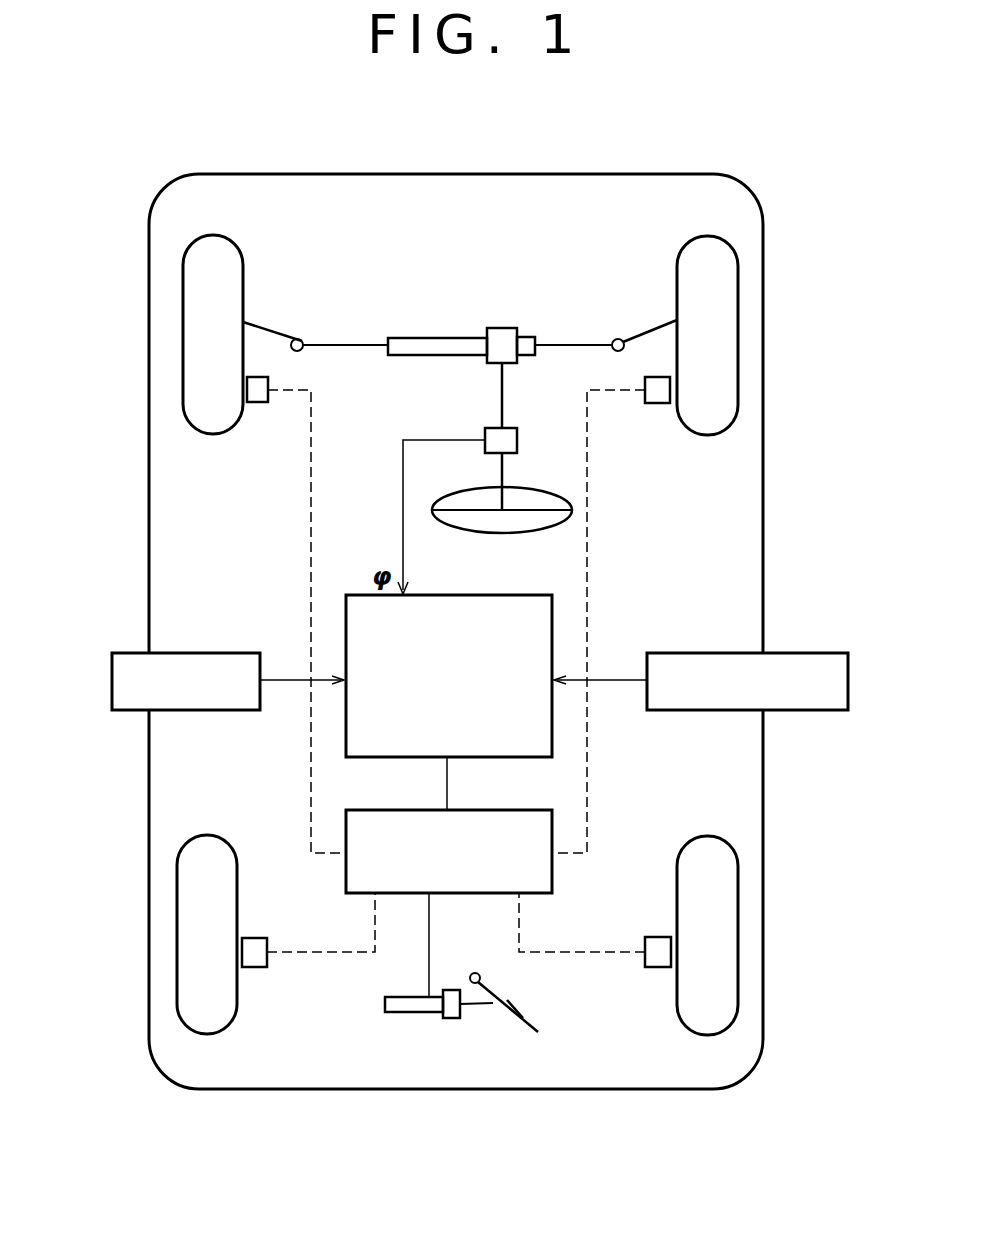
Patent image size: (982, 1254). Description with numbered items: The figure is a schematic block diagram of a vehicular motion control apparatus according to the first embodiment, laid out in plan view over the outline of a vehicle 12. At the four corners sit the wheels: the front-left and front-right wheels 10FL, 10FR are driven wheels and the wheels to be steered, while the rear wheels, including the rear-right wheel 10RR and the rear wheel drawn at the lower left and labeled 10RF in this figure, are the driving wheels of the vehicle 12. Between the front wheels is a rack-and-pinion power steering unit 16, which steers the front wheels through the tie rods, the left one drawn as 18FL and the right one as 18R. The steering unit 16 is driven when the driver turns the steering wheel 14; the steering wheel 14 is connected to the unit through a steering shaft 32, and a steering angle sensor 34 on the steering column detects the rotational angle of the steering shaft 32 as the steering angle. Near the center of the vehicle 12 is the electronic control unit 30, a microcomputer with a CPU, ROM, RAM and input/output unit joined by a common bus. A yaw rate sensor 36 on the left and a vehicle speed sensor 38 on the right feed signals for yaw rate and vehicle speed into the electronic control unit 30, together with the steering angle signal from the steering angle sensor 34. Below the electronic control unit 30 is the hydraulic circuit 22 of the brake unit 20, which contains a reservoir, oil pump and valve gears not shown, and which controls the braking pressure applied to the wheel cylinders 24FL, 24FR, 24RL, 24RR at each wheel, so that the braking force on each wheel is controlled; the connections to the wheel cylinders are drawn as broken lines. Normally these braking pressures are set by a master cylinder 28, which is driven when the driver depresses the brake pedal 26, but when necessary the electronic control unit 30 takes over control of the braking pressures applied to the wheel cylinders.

The front-left wheel 10FL is at (183, 341).
The front-right wheel 10FR is at (738, 338).
The rear left wheel 10RF is at (177, 938).
The rear-right wheel 10RR is at (738, 957).
The vehicle 12 is at (763, 485).
The steering wheel 14 is at (495, 533).
The rack-and-pinion power steering unit 16 is at (486, 320).
The front left tie rod 18FL is at (250, 324).
The tie rod 18R is at (650, 332).
The brake unit 20 is at (367, 987).
The hydraulic circuit 22 is at (466, 886).
The wheel cylinder 24FL is at (258, 404).
The wheel cylinder 24FR is at (657, 405).
The wheel cylinder 24RL is at (255, 938).
The wheel cylinder 24RR is at (655, 937).
The brake pedal 26 is at (537, 1018).
The master cylinder 28 is at (412, 1013).
The electronic control unit 30 is at (467, 728).
The steering shaft 32 is at (502, 385).
The steering angle sensor 34 is at (517, 438).
The yaw rate sensor 36 is at (178, 652).
The vehicle speed sensor 38 is at (705, 652).